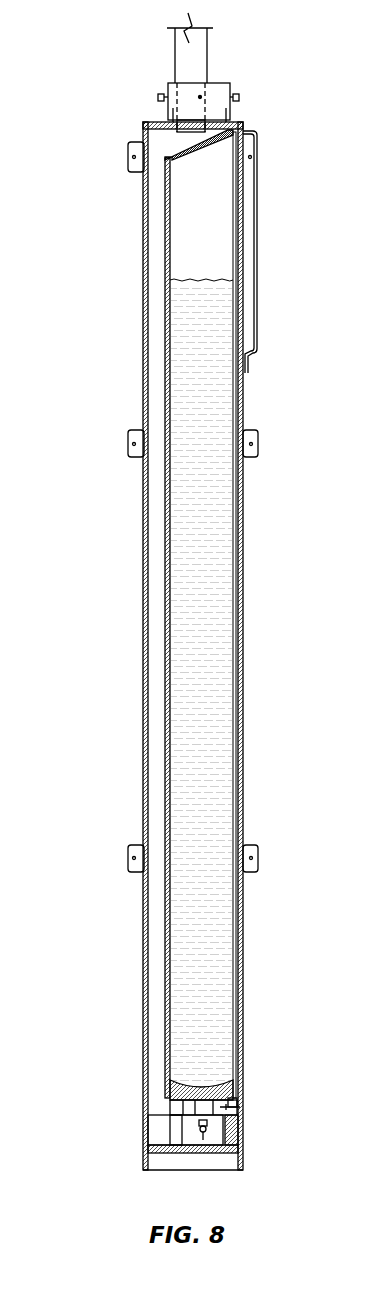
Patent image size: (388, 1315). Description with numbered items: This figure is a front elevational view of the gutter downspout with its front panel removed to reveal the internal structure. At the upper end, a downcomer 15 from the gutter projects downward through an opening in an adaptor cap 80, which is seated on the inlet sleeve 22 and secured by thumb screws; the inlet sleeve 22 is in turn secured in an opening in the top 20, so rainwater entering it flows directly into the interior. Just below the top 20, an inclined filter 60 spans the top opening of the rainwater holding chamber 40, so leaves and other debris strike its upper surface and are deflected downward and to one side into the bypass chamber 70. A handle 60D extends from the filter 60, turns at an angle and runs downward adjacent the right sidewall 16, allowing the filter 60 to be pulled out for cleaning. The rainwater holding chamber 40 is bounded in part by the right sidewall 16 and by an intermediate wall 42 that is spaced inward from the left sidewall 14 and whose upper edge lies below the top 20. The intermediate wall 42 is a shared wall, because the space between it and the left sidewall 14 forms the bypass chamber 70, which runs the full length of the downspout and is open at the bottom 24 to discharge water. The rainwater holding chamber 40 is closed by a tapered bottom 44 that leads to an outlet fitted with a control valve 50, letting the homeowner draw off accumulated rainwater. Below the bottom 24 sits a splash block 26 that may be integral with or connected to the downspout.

The downcomer 15 is at (205, 50).
The adaptor cap 80 is at (221, 93).
The inlet sleeve 22 is at (217, 111).
The top 20 is at (156, 130).
The inclined filter 60 is at (153, 129).
The handle 60D is at (256, 234).
The rainwater holding chamber 40 is at (218, 209).
The bypass chamber 70 is at (150, 210).
The left sidewall 14 is at (144, 283).
The intermediate wall 42 is at (169, 307).
The right sidewall 16 is at (240, 306).
The bottom of rainwater holding chamber 44 is at (205, 1090).
The control valve 50 is at (208, 1122).
The bottom 24 is at (190, 1117).
The splash block 26 is at (210, 1160).